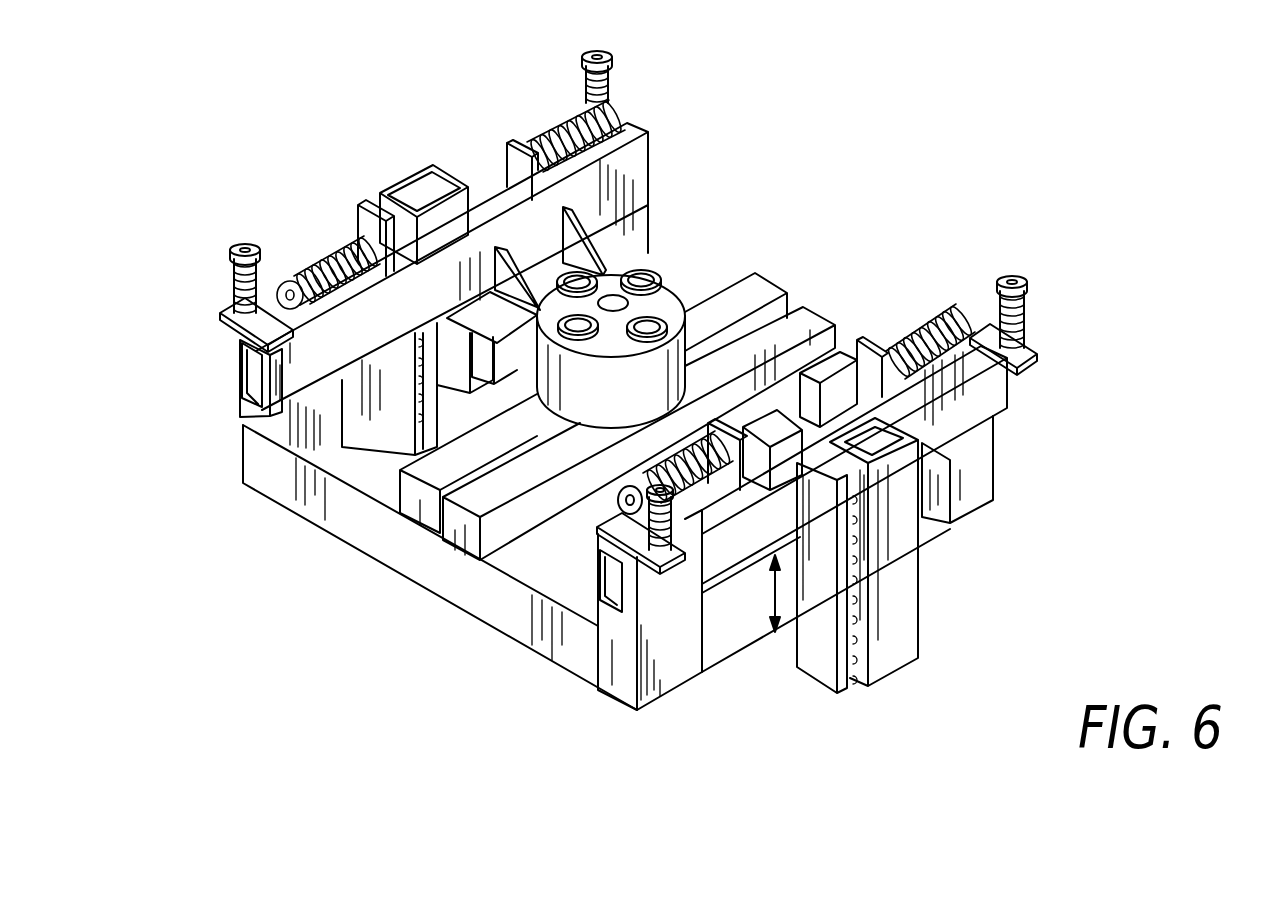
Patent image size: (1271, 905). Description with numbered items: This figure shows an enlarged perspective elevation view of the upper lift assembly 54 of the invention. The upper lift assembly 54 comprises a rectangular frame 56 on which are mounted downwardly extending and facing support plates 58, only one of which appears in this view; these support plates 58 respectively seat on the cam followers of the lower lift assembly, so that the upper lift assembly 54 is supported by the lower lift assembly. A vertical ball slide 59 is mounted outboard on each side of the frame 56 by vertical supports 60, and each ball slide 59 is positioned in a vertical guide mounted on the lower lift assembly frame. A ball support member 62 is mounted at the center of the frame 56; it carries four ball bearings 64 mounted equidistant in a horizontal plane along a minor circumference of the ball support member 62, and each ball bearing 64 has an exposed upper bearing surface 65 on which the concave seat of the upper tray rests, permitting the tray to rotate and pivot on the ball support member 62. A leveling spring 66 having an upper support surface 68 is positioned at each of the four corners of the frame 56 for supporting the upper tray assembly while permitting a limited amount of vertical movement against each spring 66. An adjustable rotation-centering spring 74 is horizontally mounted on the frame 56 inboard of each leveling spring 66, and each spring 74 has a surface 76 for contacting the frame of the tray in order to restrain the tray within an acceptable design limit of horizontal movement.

The upper lift assembly 54 is at (480, 641).
The rectangular frame 56 is at (987, 397).
The support plate 58 is at (527, 362).
The vertical ball slide 59 is at (362, 203).
The vertical support 60 is at (450, 173).
The ball support member 62 is at (622, 401).
The ball bearing 64 is at (658, 278).
The upper bearing surface 65 is at (652, 278).
The leveling spring 66 is at (233, 287).
The upper support surface 68 is at (1024, 278).
The rotation-centering spring 74 is at (327, 258).
The surface 76 is at (620, 508).